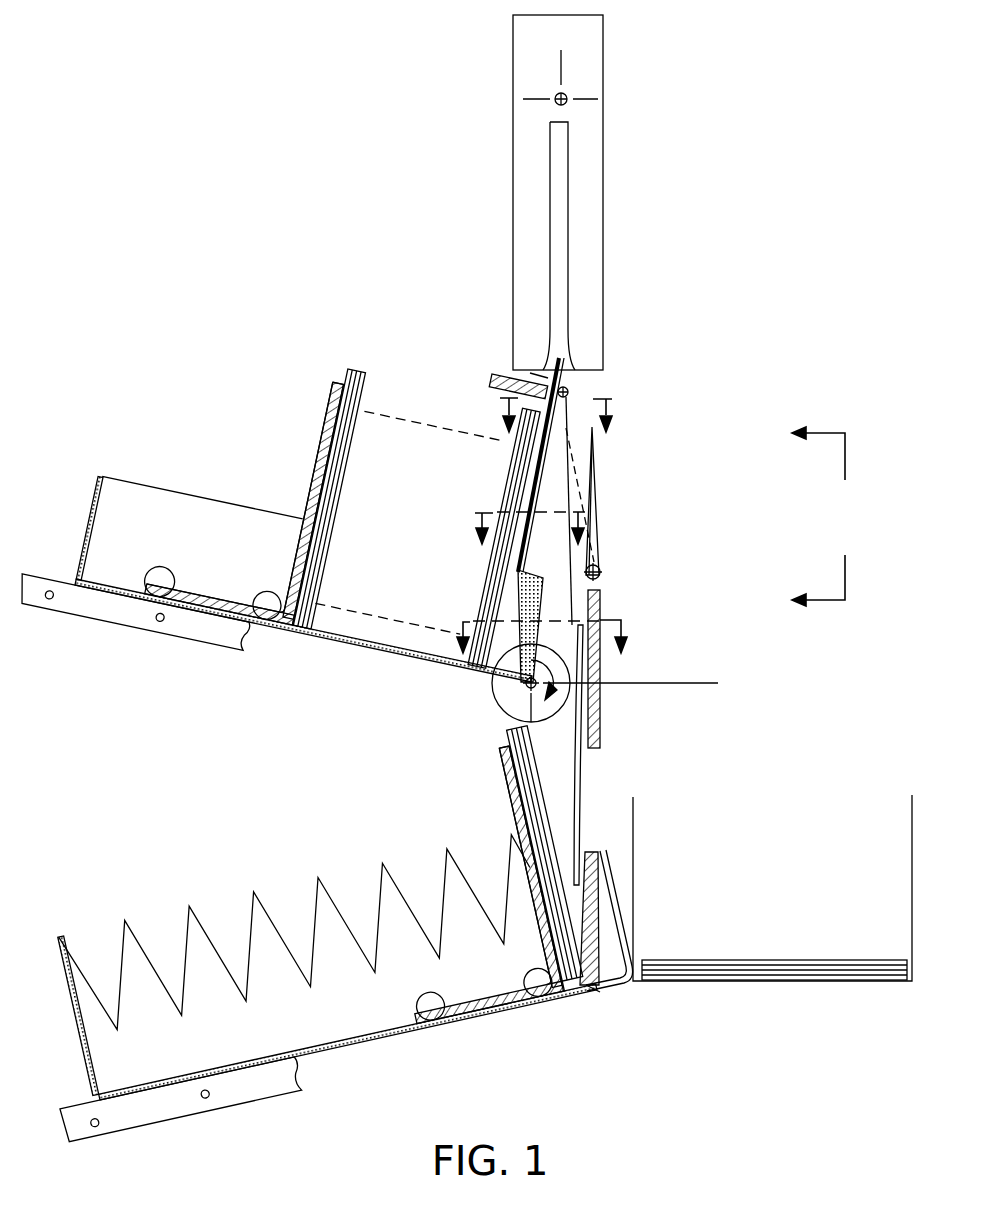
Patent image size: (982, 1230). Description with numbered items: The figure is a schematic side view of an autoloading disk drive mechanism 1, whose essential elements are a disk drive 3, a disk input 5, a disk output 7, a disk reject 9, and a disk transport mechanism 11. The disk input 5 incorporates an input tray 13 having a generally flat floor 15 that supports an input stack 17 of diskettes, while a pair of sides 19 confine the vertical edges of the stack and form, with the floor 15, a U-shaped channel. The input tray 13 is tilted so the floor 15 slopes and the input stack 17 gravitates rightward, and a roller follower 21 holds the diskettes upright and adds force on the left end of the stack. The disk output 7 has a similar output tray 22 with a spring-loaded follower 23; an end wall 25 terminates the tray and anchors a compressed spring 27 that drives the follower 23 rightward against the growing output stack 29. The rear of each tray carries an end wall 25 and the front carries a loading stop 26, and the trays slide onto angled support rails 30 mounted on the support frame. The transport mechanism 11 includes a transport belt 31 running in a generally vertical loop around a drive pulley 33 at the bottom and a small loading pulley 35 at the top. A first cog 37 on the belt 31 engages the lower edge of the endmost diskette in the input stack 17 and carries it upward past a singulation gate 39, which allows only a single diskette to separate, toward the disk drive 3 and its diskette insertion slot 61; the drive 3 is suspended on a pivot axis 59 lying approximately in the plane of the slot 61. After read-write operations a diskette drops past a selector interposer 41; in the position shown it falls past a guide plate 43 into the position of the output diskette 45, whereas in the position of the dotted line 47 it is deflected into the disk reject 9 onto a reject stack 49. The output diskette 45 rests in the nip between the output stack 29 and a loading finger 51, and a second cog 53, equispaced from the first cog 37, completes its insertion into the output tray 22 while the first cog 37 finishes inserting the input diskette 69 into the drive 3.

The autoloading disk drive mechanism 1 is at (366, 223).
The disk drive 3 is at (485, 150).
The disk input 5 is at (268, 294).
The disk output 7 is at (250, 800).
The disk reject 9 is at (792, 765).
The disk transport mechanism 11 is at (690, 580).
The input tray 13 is at (258, 615).
The floor 15 is at (398, 656).
The input stack 17 is at (360, 358).
The sides 19 is at (222, 500).
The roller follower 21 is at (325, 417).
The output tray 22 is at (415, 1018).
The spring-loaded follower 23 is at (450, 787).
The end wall 25 is at (97, 478).
The loading stop 26 is at (544, 594).
The spring 27 is at (318, 878).
The output stack 29 is at (497, 735).
The support rails 30 is at (158, 632).
The transport belt 31 is at (565, 566).
The drive pulley 33 is at (505, 715).
The loading pulley 35 is at (570, 390).
The first cog 37 is at (520, 677).
The singulation gate 39 is at (493, 390).
The selector interposer 41 is at (622, 540).
The guide plate 43 is at (601, 738).
The output diskette 45 is at (583, 795).
The dotted line 47 is at (587, 486).
The reject stack 49 is at (768, 952).
The loading finger 51 is at (596, 990).
The second cog 53 is at (598, 508).
The pivot axis 59 is at (567, 95).
The diskette insertion slot 61 is at (558, 240).
The input diskette 69 is at (528, 372).